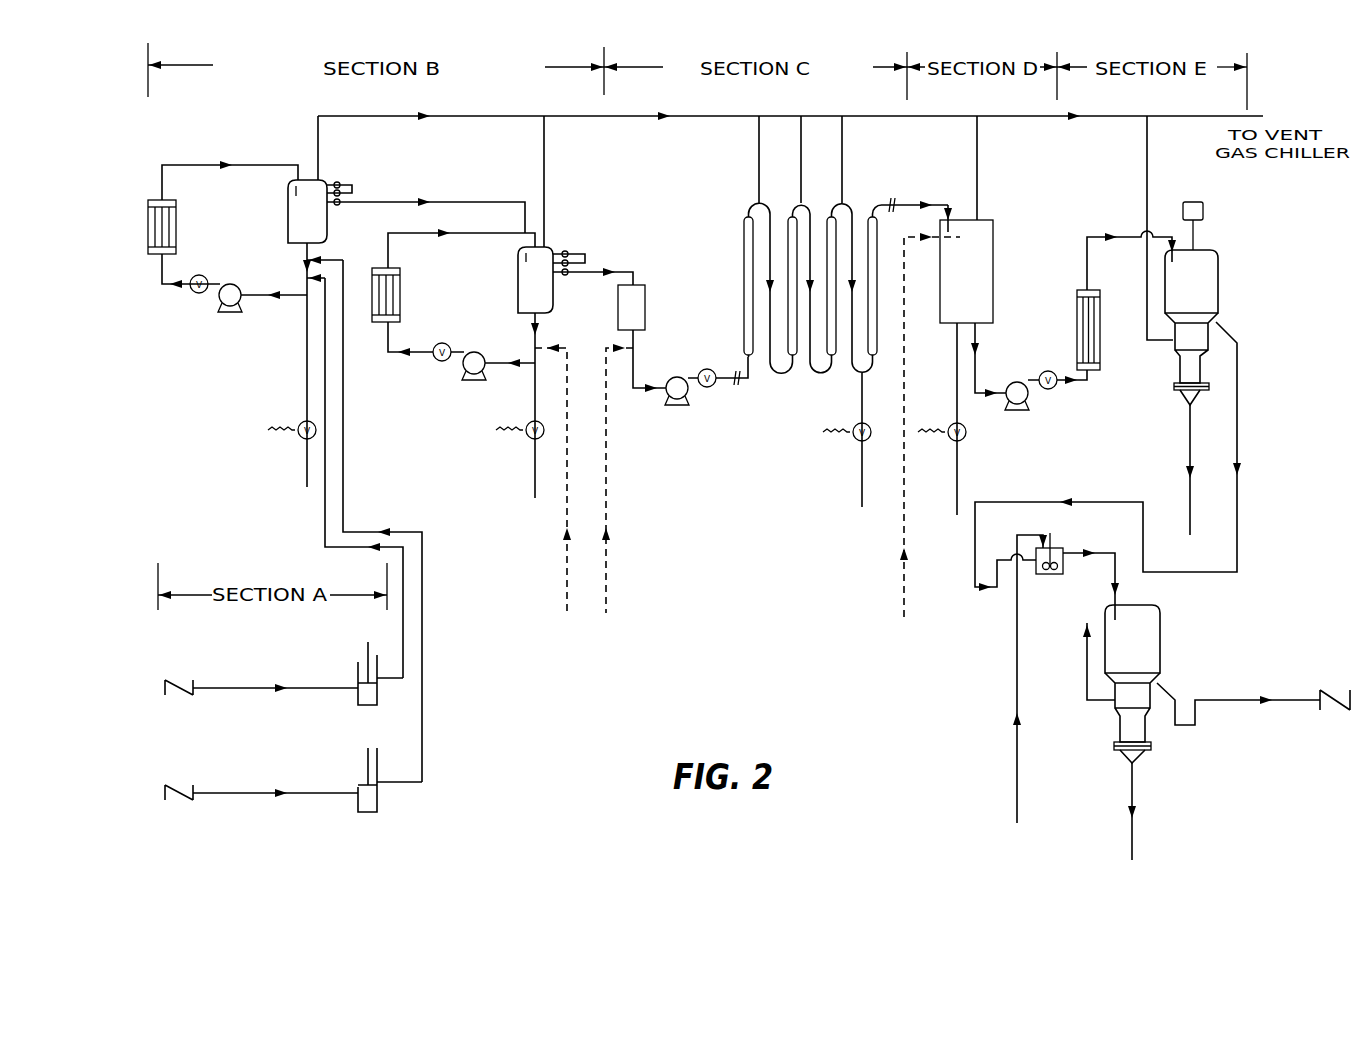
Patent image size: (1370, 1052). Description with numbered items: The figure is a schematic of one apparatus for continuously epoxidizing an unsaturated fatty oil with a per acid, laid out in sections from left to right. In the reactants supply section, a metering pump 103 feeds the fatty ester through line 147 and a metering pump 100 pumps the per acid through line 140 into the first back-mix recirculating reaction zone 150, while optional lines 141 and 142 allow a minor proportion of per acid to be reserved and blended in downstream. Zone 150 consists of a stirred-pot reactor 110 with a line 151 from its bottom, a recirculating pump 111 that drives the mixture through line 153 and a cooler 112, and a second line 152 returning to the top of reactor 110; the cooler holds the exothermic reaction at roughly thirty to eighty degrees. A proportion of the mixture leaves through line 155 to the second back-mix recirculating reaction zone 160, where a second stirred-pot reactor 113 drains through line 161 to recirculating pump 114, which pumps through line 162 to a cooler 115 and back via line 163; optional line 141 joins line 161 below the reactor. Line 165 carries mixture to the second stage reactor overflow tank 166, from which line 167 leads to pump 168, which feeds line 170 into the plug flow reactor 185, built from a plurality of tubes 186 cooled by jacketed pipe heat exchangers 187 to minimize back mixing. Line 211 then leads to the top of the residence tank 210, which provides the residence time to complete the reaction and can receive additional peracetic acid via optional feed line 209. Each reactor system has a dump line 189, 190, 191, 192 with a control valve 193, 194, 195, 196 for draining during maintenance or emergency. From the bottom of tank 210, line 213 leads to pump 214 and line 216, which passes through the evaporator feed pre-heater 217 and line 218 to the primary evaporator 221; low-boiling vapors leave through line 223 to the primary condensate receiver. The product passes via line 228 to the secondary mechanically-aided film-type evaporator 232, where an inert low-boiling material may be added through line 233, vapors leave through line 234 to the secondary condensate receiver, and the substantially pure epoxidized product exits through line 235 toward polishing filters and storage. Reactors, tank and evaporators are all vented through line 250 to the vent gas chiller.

The metering pump 100 is at (358, 778).
The metering pump 103 is at (357, 664).
The stirred-pot reactor 110 is at (319, 223).
The recirculating pump 111 is at (232, 284).
The cooler 112 is at (175, 228).
The second stirred-pot reactor 113 is at (547, 291).
The recirculating pump 114 is at (465, 362).
The cooler 115 is at (400, 298).
The per acid line 140 is at (343, 506).
The optional feed line 141 is at (567, 510).
The optional feed line 142 is at (606, 476).
The fatty ester feed line 147 is at (325, 524).
The first back-mix recirculating reaction zone 150 is at (266, 230).
The line 151 is at (305, 262).
The second line 152 is at (255, 165).
The line 153 is at (163, 286).
The line 155 is at (470, 202).
The second back-mix recirculating reaction zone 160 is at (479, 300).
The line 161 is at (535, 348).
The line 162 is at (415, 350).
The line 163 is at (478, 229).
The line 165 is at (620, 272).
The second stage reactor overflow tank 166 is at (643, 321).
The line 167 is at (657, 392).
The pump 168 is at (673, 378).
The line 170 is at (722, 376).
The plug flow reactor 185 is at (825, 267).
The tubes 186 is at (746, 213).
The jacketed pipe heat exchangers 187 is at (744, 268).
The dump line 189 is at (306, 462).
The dump line 190 is at (535, 472).
The dump line 191 is at (861, 488).
The dump line 192 is at (959, 478).
The control valve 193 is at (301, 422).
The control valve 194 is at (533, 422).
The control valve 195 is at (868, 426).
The control valve 196 is at (966, 432).
The optional feed line 209 is at (904, 592).
The residence tank 210 is at (981, 276).
The line 211 is at (905, 200).
The line 213 is at (988, 390).
The pump 214 is at (1023, 382).
The line 216 is at (1080, 384).
The evaporator feed pre-heater 217 is at (1077, 336).
The line 218 is at (1125, 237).
The primary evaporator 221 is at (1205, 295).
The line 223 is at (1190, 410).
The line 228 is at (1113, 553).
The secondary mechanically-aided film-type evaporator 232 is at (1148, 650).
The line 233 is at (1032, 535).
The line 234 is at (1133, 830).
The line 235 is at (1291, 700).
The vent line 250 is at (601, 118).